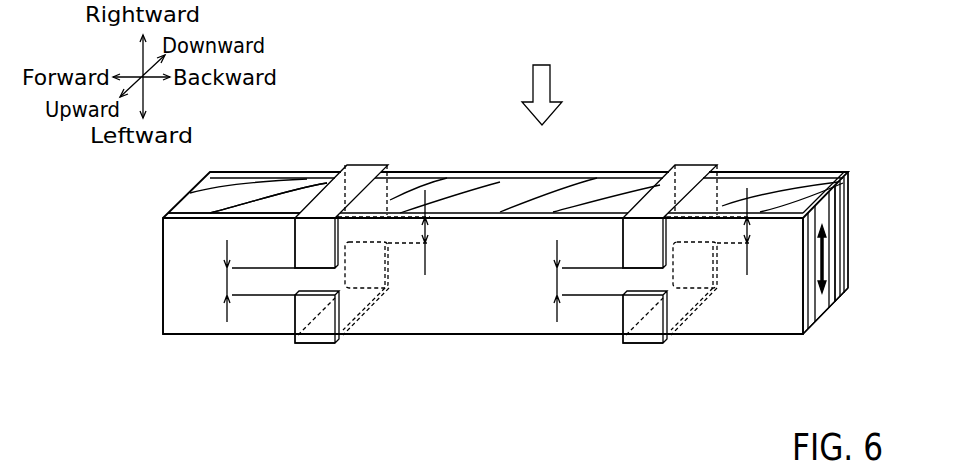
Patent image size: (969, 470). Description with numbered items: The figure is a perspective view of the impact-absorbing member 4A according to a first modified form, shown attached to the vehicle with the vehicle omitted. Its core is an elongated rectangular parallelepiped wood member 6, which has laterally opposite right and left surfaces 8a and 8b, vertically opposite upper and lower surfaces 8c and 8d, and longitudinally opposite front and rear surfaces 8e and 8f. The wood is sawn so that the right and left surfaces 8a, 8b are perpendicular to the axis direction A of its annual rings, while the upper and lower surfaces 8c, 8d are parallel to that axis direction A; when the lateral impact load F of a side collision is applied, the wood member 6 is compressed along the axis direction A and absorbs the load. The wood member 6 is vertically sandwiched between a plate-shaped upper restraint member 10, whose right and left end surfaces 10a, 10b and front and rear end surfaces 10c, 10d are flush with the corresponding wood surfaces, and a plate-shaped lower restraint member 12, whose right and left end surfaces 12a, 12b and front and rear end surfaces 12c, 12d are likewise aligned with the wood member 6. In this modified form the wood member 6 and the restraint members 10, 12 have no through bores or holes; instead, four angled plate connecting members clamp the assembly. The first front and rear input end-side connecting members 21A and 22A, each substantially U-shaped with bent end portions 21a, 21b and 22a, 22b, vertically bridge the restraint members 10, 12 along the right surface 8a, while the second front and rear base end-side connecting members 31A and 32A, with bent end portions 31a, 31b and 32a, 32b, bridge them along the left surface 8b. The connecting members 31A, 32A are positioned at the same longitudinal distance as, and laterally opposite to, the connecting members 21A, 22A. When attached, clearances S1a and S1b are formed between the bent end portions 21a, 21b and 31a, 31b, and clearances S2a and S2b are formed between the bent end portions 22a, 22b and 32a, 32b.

The impact-absorbing member 4A is at (774, 104).
The wood member 6 is at (236, 190).
The right surface 8a is at (592, 197).
The left surface 8b is at (828, 310).
The upper surface 8c is at (803, 295).
The lower surface 8d is at (845, 250).
The front surface 8e is at (163, 262).
The rear surface 8f is at (835, 222).
The upper restraint member 10 is at (491, 200).
The right end surface 10a is at (207, 215).
The left end surface 10b is at (803, 336).
The front end surface 10c is at (165, 218).
The rear end surface 10d is at (803, 298).
The lower restraint member 12 is at (447, 164).
The right end surface 12a is at (793, 178).
The left end surface 12b is at (847, 290).
The front end surface 12c is at (212, 173).
The rear end surface 12d is at (847, 198).
The connecting member 21A is at (369, 157).
The bent end portion 21a is at (307, 245).
The bent end portion 21b is at (372, 201).
The connecting member 22A is at (701, 157).
The bent end portion 22a is at (633, 245).
The bent end portion 22b is at (703, 193).
The connecting member 31A is at (319, 353).
The bent end portion 31a is at (307, 313).
The bent end portion 31b is at (365, 265).
The connecting member 32A is at (647, 353).
The bent end portion 32a is at (633, 313).
The bent end portion 32b is at (695, 265).
The clearance S1a is at (239, 281).
The clearance S1b is at (447, 232).
The clearance S2a is at (566, 281).
The clearance S2b is at (767, 231).
The axis direction of annual rings A is at (818, 263).
The impact load F is at (545, 75).